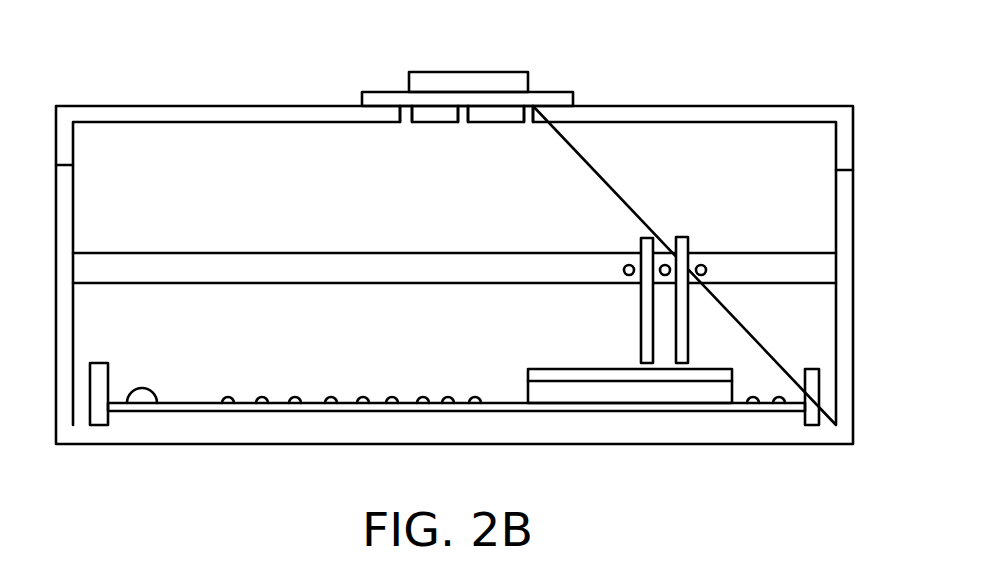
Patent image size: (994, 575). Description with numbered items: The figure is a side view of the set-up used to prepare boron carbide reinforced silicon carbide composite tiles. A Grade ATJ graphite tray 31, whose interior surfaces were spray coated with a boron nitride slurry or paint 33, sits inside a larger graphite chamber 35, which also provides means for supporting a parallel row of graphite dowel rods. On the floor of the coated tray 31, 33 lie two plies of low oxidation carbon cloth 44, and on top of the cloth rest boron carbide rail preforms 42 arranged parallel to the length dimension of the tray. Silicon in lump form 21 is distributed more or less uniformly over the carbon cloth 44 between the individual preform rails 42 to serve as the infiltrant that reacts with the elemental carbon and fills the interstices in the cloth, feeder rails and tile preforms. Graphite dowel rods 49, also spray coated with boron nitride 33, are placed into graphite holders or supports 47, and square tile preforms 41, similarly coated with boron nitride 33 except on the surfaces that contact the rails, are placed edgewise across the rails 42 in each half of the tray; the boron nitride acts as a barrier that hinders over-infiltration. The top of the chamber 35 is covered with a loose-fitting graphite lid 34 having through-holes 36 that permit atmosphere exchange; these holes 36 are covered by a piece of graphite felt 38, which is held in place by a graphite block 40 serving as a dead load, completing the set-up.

The silicon in lump form 21 is at (228, 395).
The graphite tray 31 is at (102, 417).
The boron nitride paint 33 is at (683, 237).
The graphite lid 34 is at (77, 110).
The graphite chamber 35 is at (847, 427).
The through-holes 36 is at (407, 117).
The graphite felt 38 is at (373, 97).
The graphite block 40 is at (433, 82).
The tile preforms 41 is at (648, 238).
The boron carbide rail preforms 42 is at (537, 392).
The carbon cloth 44 is at (157, 400).
The graphite holders 47 is at (95, 267).
The graphite dowel rods 49 is at (702, 263).